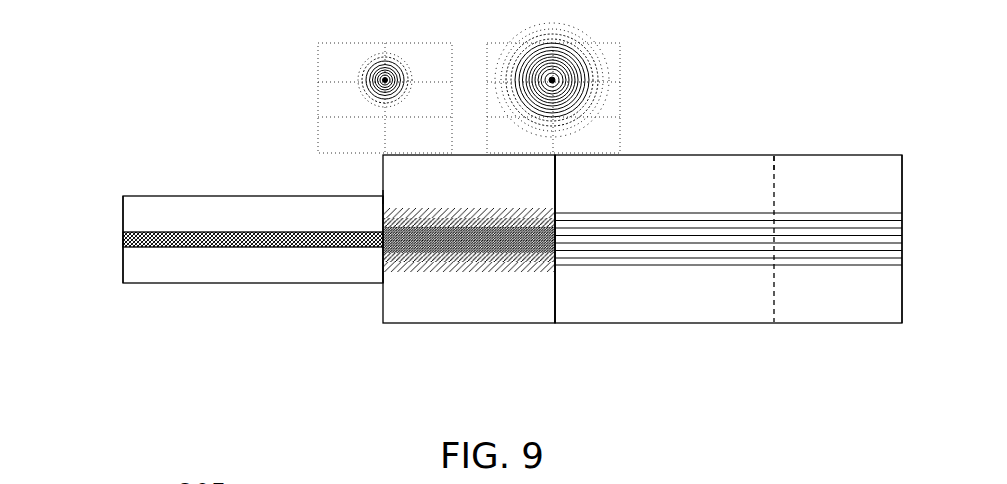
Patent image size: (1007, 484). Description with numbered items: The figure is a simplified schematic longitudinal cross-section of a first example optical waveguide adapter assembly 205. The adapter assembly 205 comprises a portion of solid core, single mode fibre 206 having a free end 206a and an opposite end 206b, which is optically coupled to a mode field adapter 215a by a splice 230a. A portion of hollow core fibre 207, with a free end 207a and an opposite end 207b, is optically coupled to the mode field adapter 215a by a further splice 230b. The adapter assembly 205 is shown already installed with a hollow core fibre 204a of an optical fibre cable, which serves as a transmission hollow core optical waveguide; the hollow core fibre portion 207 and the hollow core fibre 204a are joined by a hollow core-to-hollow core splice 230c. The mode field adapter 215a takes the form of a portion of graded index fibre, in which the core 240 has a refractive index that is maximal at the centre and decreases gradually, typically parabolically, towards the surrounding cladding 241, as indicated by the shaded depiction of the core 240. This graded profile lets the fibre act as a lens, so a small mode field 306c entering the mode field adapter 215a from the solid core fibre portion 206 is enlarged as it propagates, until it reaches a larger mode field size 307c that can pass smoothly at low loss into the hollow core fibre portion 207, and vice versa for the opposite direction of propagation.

The adapter assembly 205 is at (492, 211).
The solid core single mode fibre 206 is at (225, 286).
The free end 206a is at (123, 284).
The opposite end 206b is at (382, 288).
The splice 230a is at (383, 196).
The further splice 230b is at (556, 155).
The hollow core-to-hollow core splice 230c is at (775, 155).
The mode field adapter 215a is at (454, 286).
The core 240 is at (487, 250).
The cladding 241 is at (467, 312).
The hollow core fibre 207 is at (728, 234).
The free end 207a is at (775, 324).
The opposite end 207b is at (556, 324).
The hollow core fibre 204a is at (866, 324).
The small mode field 306c is at (360, 70).
The larger mode field size 307c is at (582, 62).